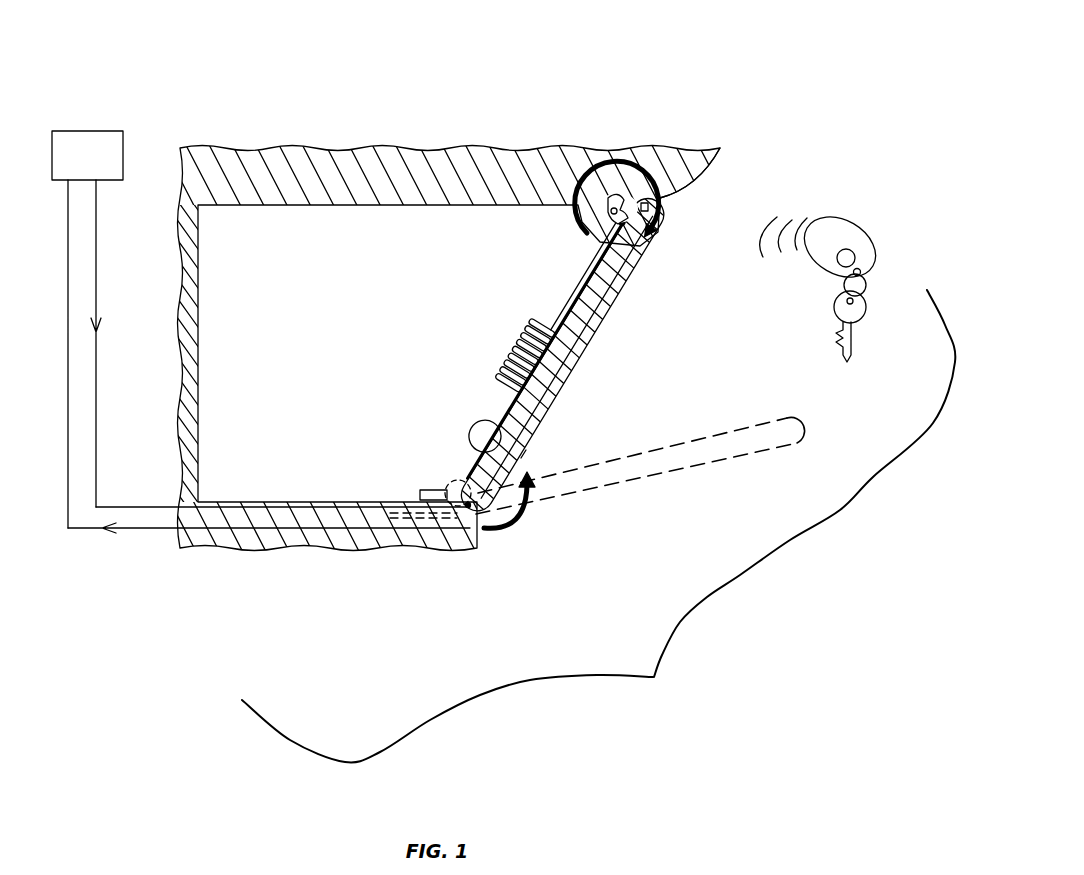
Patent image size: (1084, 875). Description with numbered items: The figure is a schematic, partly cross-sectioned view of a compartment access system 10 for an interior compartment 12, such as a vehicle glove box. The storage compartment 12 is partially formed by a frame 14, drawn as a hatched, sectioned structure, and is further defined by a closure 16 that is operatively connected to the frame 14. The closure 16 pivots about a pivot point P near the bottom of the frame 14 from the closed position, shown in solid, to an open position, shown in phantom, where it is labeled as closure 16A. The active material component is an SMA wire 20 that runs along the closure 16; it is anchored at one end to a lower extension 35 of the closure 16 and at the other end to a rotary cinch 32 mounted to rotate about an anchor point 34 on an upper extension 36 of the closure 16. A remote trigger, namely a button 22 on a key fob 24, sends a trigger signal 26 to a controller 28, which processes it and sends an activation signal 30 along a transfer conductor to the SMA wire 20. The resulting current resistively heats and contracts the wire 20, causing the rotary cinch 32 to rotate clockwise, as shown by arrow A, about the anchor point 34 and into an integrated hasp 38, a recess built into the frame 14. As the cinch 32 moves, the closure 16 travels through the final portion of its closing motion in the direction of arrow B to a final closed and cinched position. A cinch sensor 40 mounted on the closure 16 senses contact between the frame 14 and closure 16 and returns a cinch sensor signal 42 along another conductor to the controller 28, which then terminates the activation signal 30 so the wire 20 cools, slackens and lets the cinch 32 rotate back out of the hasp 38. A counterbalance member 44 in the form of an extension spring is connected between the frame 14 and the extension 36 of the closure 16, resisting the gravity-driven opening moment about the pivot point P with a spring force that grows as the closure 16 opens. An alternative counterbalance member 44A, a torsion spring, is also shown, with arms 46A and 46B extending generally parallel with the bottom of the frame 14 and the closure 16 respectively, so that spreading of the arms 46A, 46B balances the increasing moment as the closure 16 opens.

The compartment access system 10 is at (598, 526).
The interior compartment 12 is at (297, 381).
The frame 14 is at (494, 170).
The closure 16 is at (597, 325).
The closure in open position 16A is at (624, 488).
The SMA wire 20 is at (505, 402).
The button 22 is at (865, 262).
The key fob 24 is at (847, 220).
The trigger signal 26 is at (782, 226).
The controller 28 is at (101, 166).
The activation signal 30 is at (97, 232).
The rotary cinch 32 is at (572, 232).
The anchor point 34 is at (613, 192).
The lower extension 35 is at (470, 430).
The upper extension 36 is at (633, 203).
The integrated hasp 38 is at (603, 205).
The cinch sensor 40 is at (673, 152).
The cinch sensor signal 42 is at (150, 533).
The counterbalance member 44 is at (528, 345).
The alternative counterbalance member 44A is at (430, 560).
The torsion spring arm 46A is at (388, 532).
The torsion spring arm 46B is at (521, 458).
The arrow A is at (603, 162).
The arrow B is at (527, 520).
The pivot point P is at (448, 560).